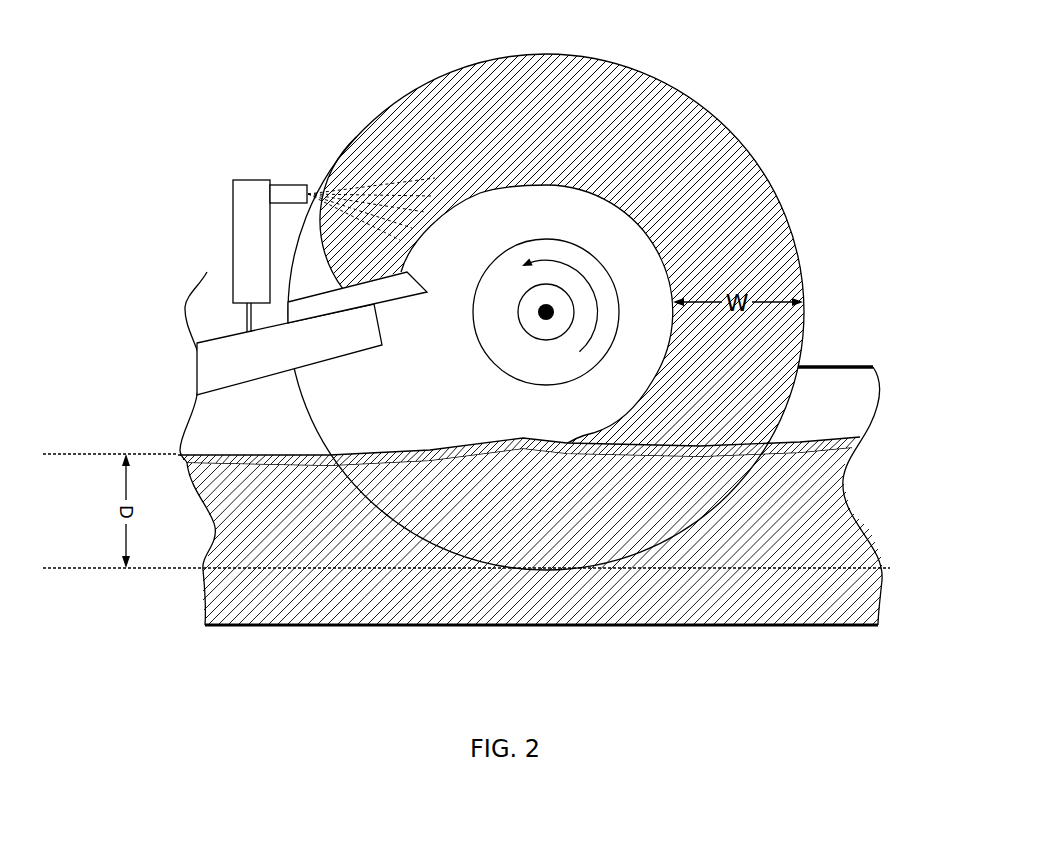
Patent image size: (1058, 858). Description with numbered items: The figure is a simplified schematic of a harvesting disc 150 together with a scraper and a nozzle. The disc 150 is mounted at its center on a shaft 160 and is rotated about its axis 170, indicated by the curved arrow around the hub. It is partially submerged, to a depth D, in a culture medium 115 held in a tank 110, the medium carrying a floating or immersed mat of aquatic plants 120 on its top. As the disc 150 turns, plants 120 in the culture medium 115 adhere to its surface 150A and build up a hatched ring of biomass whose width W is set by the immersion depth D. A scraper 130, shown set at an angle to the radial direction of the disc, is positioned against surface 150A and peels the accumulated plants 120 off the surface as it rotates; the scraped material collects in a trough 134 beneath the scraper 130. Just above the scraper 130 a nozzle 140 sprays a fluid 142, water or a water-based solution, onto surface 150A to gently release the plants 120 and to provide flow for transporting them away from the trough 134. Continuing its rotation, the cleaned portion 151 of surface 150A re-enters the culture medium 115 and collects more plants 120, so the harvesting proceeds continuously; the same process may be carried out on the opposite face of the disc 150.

The tank 110 is at (829, 380).
The culture medium 115 is at (768, 566).
The aquatic plants 120 is at (678, 186).
The scraper 130 is at (399, 302).
The trough 134 is at (346, 358).
The nozzle 140 is at (243, 218).
The fluid 142 is at (318, 191).
The disc 150 is at (668, 79).
The surface 150A is at (718, 167).
The portion 151 is at (330, 408).
The shaft 160 is at (520, 320).
The axis 170 is at (547, 303).